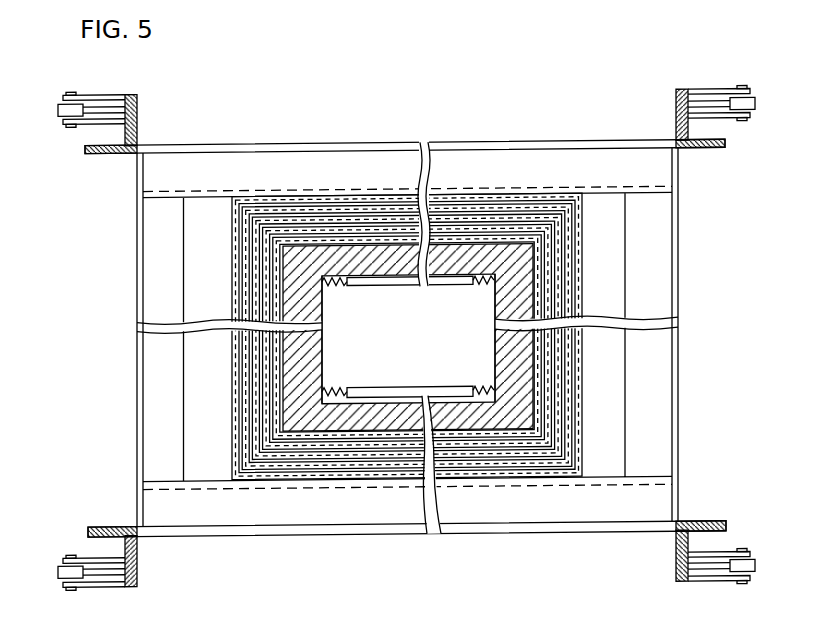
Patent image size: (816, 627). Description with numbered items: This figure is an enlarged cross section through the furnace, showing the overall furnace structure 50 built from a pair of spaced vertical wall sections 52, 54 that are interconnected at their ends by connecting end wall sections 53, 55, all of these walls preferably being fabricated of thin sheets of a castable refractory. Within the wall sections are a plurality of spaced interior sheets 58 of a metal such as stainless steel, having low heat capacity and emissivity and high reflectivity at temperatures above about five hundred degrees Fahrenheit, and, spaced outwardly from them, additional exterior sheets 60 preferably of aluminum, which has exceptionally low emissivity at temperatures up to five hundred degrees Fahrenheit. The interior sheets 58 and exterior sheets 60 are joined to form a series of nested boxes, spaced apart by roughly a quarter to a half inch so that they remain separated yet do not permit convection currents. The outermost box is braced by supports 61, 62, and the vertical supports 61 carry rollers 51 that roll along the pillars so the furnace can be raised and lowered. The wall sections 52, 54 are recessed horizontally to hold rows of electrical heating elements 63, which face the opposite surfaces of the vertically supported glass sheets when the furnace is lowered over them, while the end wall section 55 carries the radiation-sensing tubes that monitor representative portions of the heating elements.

The vacuum insulation panel assembly 50 is at (135, 317).
The rollers 51 is at (58, 106).
The vertical wall section 52 is at (396, 412).
The connecting end wall section 53 is at (506, 305).
The vertical wall section 54 is at (386, 264).
The connecting end wall section 55 is at (315, 321).
The interior sheets 58 is at (543, 370).
The exterior sheets 60 is at (562, 398).
The vertical supports 61 is at (98, 144).
The supports 62 is at (152, 176).
The electrical heating elements 63 is at (340, 388).